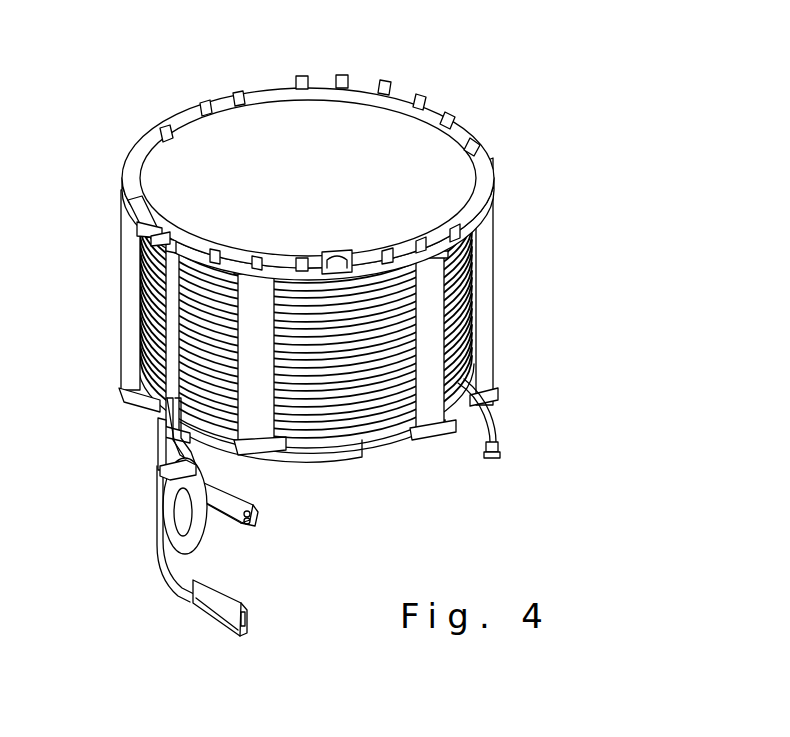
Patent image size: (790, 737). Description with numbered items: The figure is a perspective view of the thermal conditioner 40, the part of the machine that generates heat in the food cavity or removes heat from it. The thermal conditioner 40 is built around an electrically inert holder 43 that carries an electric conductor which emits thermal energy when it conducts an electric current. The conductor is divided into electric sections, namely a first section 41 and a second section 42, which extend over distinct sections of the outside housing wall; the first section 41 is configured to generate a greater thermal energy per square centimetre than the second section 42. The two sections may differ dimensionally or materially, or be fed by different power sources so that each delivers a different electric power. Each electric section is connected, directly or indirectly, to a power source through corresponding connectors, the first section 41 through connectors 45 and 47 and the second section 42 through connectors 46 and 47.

The thermal conditioner 40 is at (536, 103).
The first section 41 is at (457, 343).
The second section 42 is at (460, 245).
The electrically inert holder 43 is at (173, 130).
The connector 45 is at (258, 517).
The connector 46 is at (245, 610).
The connector 47 is at (503, 449).